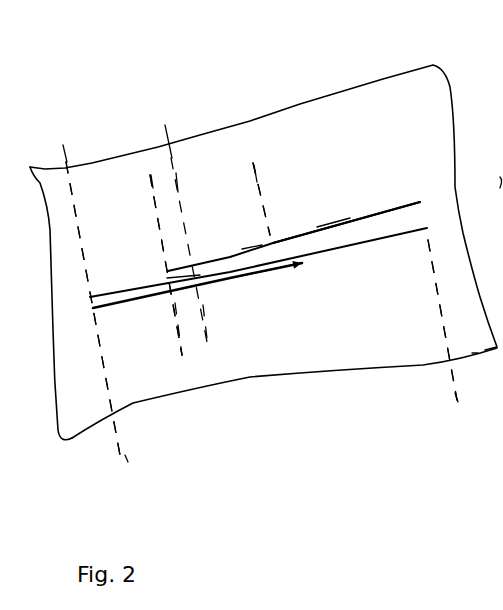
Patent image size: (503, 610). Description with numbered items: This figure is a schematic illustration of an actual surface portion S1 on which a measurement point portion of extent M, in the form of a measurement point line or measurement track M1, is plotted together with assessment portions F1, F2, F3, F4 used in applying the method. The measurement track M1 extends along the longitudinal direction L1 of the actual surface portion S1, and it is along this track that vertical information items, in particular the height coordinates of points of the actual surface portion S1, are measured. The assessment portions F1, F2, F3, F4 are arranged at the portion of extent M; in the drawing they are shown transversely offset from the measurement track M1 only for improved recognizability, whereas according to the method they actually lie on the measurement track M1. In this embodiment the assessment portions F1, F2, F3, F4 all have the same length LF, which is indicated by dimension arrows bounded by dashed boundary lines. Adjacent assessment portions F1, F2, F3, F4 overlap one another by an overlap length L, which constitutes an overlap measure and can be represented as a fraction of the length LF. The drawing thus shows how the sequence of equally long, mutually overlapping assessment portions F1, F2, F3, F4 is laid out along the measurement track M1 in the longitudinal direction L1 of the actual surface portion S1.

The actual surface portion S1 is at (448, 90).
The assessment portion F1 is at (126, 289).
The assessment portion F2 is at (205, 263).
The assessment portion F3 is at (277, 241).
The assessment portion F4 is at (362, 212).
The portion of extent M is at (349, 276).
The measurement track M1 is at (375, 243).
The longitudinal direction L1 is at (267, 272).
The overlap length L is at (248, 347).
The length LF is at (163, 129).